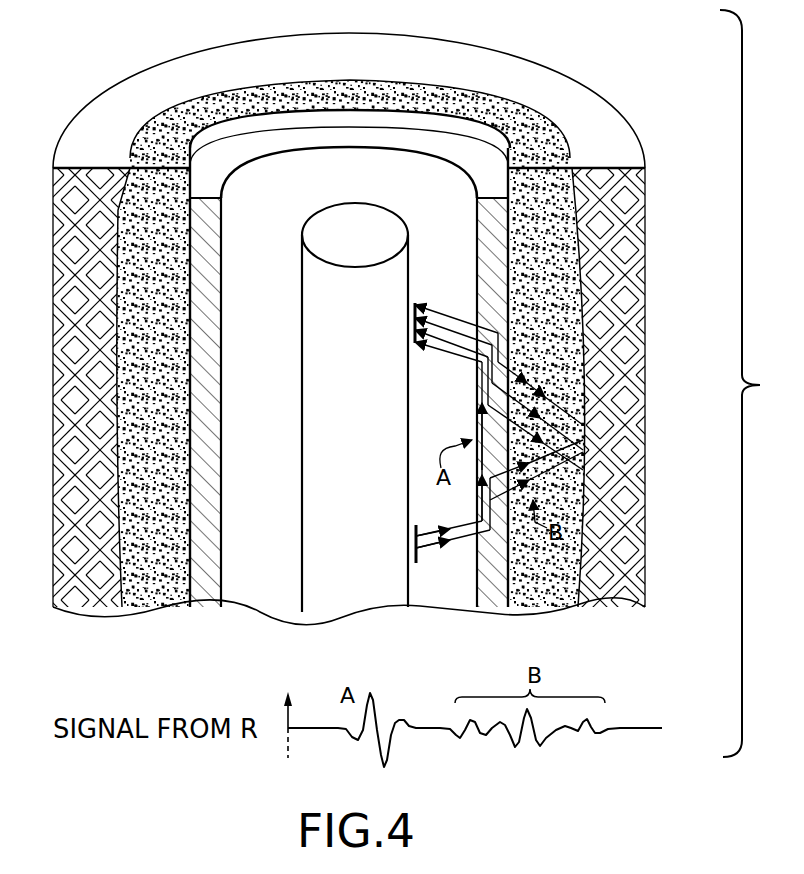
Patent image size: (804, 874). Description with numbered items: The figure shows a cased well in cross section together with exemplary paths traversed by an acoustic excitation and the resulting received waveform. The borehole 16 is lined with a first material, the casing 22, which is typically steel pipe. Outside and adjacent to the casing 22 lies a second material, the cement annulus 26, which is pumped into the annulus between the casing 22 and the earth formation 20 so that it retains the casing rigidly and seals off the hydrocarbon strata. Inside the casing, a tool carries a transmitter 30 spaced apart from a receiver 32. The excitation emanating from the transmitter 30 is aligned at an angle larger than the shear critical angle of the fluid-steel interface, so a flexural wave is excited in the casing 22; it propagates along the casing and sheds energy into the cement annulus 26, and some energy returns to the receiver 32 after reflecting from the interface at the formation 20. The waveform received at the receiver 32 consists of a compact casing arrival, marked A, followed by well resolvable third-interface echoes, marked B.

The borehole 16 is at (333, 157).
The earth formation 20 is at (460, 48).
The casing 22 is at (475, 168).
The cement annulus 26 is at (503, 110).
The transmitter 30 is at (416, 561).
The receiver 32 is at (415, 303).